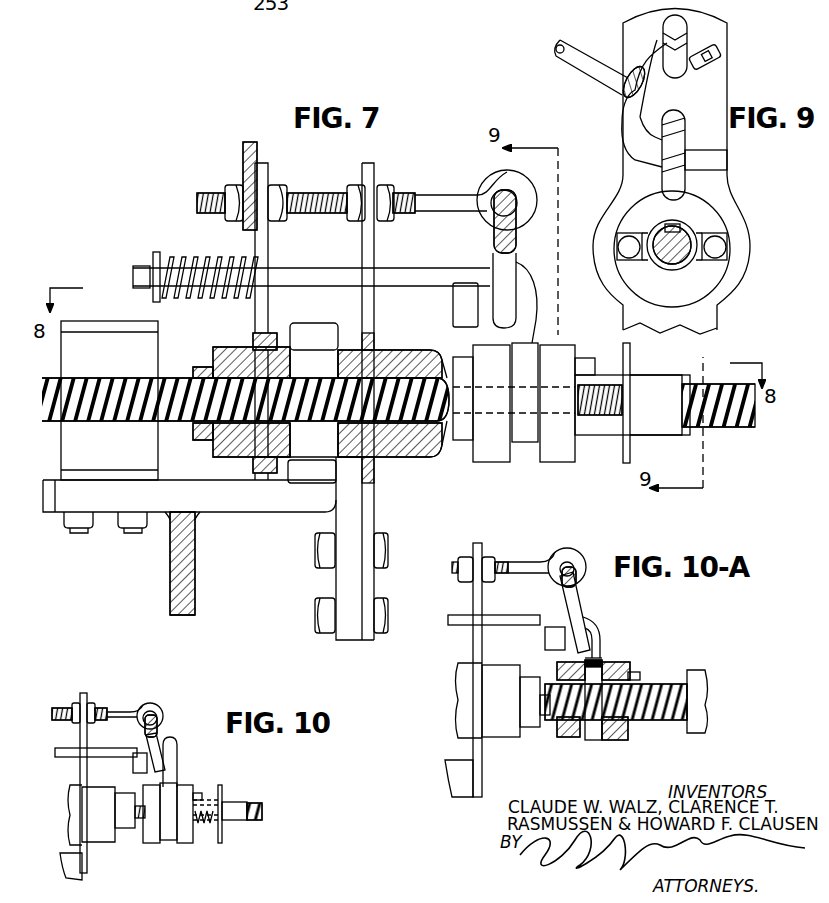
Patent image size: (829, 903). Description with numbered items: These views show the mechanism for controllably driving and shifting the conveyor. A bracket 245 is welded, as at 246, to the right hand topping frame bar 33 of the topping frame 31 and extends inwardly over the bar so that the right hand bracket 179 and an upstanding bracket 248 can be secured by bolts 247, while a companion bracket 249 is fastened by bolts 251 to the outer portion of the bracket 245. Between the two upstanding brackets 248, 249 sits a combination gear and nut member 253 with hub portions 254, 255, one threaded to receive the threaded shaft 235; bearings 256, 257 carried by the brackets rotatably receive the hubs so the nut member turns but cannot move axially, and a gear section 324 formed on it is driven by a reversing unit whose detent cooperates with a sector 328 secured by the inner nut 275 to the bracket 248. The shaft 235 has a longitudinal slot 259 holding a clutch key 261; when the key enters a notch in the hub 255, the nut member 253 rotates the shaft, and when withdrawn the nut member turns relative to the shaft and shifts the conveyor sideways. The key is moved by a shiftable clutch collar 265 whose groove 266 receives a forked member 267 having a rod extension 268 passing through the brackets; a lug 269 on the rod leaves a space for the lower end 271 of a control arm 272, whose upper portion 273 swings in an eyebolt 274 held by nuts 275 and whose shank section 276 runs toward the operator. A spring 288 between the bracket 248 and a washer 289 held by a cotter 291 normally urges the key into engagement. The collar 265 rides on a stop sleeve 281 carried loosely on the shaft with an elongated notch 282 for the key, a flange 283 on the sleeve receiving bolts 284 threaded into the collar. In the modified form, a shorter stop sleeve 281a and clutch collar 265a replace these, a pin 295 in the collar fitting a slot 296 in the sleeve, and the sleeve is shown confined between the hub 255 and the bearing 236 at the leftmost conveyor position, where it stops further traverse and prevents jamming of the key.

In FIG. 7, the topping frame 31 is at (189, 617).
In FIG. 7, the right hand topping frame bar 33 is at (182, 577).
In FIG. 7, the right hand bracket 179 is at (148, 343).
In FIG. 7, the threaded shaft 235 is at (109, 376).
In FIG. 9, the threaded shaft 235 is at (697, 238).
In FIG. 10, the threaded shaft 235 is at (261, 804).
In FIG. 10-A, the threaded shaft 235 is at (652, 723).
In FIG. 10-A, the bearing 236 is at (702, 722).
In FIG. 7, the bracket 245 is at (270, 514).
In FIG. 10-A, the bracket 245 is at (451, 773).
In FIG. 7, the weld 246 is at (166, 520).
In FIG. 7, the bolts 247 is at (80, 533).
In FIG. 7, the upstanding bracket 248 is at (251, 256).
In FIG. 7, the companion bracket 249 is at (377, 254).
In FIG. 10, the companion bracket 249 is at (83, 783).
In FIG. 10-A, the companion bracket 249 is at (487, 598).
In FIG. 7, the bolts 251 is at (380, 605).
In FIG. 7, the combination gear and nut member 253 is at (313, 320).
In FIG. 7, the hub portion 254 is at (193, 377).
In FIG. 7, the hub portion 255 is at (446, 380).
In FIG. 10, the hub portion 255 is at (123, 828).
In FIG. 10-A, the hub portion 255 is at (530, 717).
In FIG. 7, the bearing 256 is at (228, 352).
In FIG. 7, the bearing 257 is at (385, 350).
In FIG. 10, the bearing 257 is at (97, 805).
In FIG. 10-A, the bearing 257 is at (495, 695).
In FIG. 9, the longitudinal slot 259 is at (670, 225).
In FIG. 10-A, the longitudinal slot 259 is at (603, 668).
In FIG. 7, the clutch key 261 is at (585, 370).
In FIG. 10, the clutch key 261 is at (202, 793).
In FIG. 10-A, the clutch key 261 is at (553, 672).
In FIG. 7, the shiftable clutch collar 265 is at (494, 465).
In FIG. 10, the shiftable clutch collar 265 is at (150, 847).
In FIG. 10-A, the clutch collar 265a is at (620, 747).
In FIG. 7, the groove 266 is at (535, 443).
In FIG. 10, the groove 266 is at (174, 840).
In FIG. 7, the forked member 267 is at (531, 318).
In FIG. 10, the forked member 267 is at (174, 770).
In FIG. 10-A, the forked member 267 is at (603, 635).
In FIG. 7, the rod extension 268 is at (296, 270).
In FIG. 10, the rod extension 268 is at (96, 752).
In FIG. 10-A, the rod extension 268 is at (463, 622).
In FIG. 7, the lug 269 is at (462, 300).
In FIG. 10, the lug 269 is at (140, 763).
In FIG. 10-A, the lug 269 is at (553, 637).
In FIG. 9, the lower end 271 is at (650, 148).
In FIG. 7, the control arm 272 is at (505, 221).
In FIG. 9, the control arm 272 is at (620, 105).
In FIG. 10, the control arm 272 is at (165, 738).
In FIG. 10-A, the control arm 272 is at (585, 605).
In FIG. 9, the upper portion 273 is at (712, 52).
In FIG. 7, the eyebolt 274 is at (447, 196).
In FIG. 10, the eyebolt 274 is at (115, 712).
In FIG. 10-A, the eyebolt 274 is at (523, 567).
In FIG. 7, the nuts 275 is at (238, 187).
In FIG. 9, the shank section 276 is at (575, 50).
In FIG. 7, the stop sleeve 281 is at (598, 423).
In FIG. 9, the stop sleeve 281 is at (724, 250).
In FIG. 10, the stop sleeve 281 is at (233, 803).
In FIG. 10-A, the stop sleeve 281a is at (665, 681).
In FIG. 10-A, the elongated notch 282 is at (634, 672).
In FIG. 7, the flange 283 is at (623, 453).
In FIG. 9, the flange 283 is at (703, 285).
In FIG. 7, the bolts 284 is at (638, 403).
In FIG. 7, the spring 288 is at (178, 262).
In FIG. 7, the washer 289 is at (152, 258).
In FIG. 7, the cotter 291 is at (148, 280).
In FIG. 10-A, the pin 295 is at (577, 728).
In FIG. 10-A, the slot 296 is at (563, 721).
In FIG. 7, the gear section 324 is at (310, 473).
In FIG. 7, the sector 328 is at (243, 150).